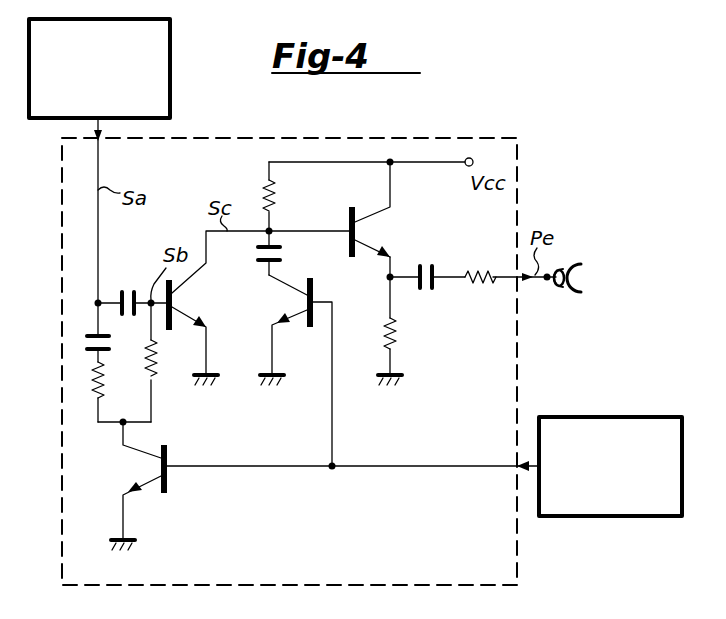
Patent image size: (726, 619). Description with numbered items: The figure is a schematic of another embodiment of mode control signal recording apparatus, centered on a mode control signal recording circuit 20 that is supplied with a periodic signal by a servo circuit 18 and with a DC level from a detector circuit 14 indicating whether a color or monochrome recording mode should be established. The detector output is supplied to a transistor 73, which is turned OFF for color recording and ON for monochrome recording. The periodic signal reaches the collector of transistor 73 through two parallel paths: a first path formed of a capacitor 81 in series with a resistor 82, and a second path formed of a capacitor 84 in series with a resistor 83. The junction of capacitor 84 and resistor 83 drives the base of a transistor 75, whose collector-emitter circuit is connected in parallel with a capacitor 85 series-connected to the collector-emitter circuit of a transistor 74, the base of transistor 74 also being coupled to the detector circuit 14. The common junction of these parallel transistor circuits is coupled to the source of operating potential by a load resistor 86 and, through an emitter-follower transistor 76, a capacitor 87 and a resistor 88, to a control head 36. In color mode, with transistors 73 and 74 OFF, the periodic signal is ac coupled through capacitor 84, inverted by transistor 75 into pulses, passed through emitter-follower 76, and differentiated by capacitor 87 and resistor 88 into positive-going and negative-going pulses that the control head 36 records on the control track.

The detector circuit 14 is at (603, 417).
The servo circuit 18 is at (170, 63).
The mode control signal recording circuit 20 is at (312, 138).
The control head 36 is at (579, 264).
The transistor 73 is at (168, 478).
The transistor 74 is at (286, 317).
The transistor 75 is at (174, 300).
The emitter-follower transistor 76 is at (357, 234).
The capacitor 81 is at (87, 340).
The resistor 82 is at (92, 386).
The resistor 83 is at (156, 372).
The capacitor 84 is at (128, 289).
The capacitor 85 is at (282, 253).
The load resistor 86 is at (276, 196).
The capacitor 87 is at (436, 292).
The resistor 88 is at (488, 292).